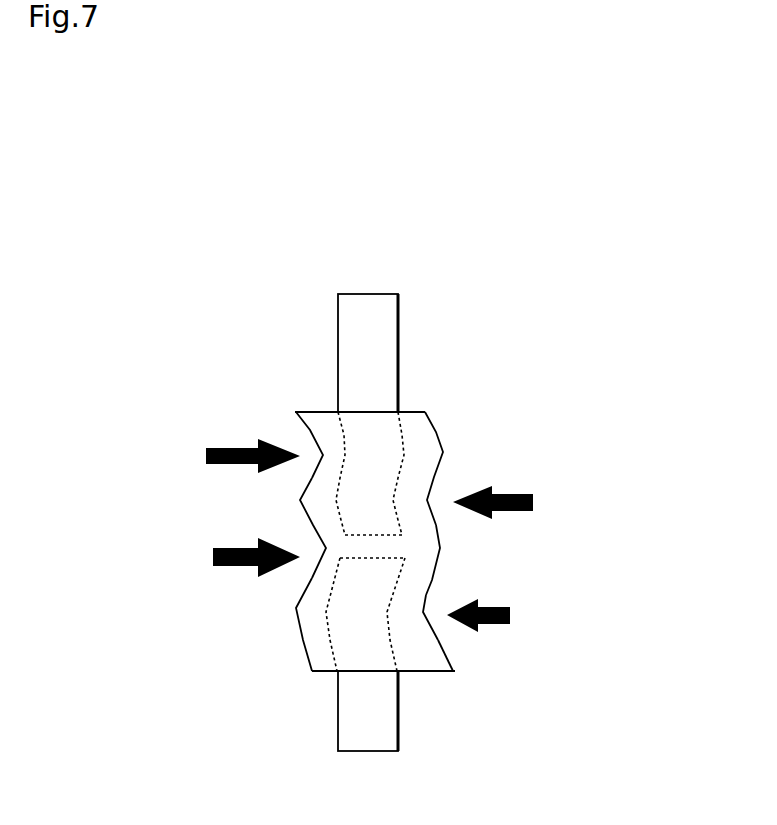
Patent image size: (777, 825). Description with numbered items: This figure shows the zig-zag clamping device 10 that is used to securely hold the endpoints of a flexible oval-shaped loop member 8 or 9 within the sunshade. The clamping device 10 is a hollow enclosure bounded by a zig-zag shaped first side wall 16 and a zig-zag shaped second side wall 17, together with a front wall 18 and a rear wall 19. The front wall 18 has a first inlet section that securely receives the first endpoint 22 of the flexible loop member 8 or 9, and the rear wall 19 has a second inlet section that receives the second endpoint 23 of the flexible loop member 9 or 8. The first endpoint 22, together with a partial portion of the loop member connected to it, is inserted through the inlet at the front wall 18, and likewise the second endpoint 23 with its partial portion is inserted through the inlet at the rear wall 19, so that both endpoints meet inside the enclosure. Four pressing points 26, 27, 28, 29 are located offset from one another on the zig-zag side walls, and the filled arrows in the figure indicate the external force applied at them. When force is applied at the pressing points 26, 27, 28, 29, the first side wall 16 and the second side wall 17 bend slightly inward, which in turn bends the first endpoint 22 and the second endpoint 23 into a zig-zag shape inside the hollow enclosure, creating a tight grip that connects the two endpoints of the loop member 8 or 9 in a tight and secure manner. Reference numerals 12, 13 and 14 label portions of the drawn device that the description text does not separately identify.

The flexible loop member 8 is at (378, 292).
The flexible loop member 9 is at (378, 292).
The clamping device 10 is at (511, 275).
The upper tube end 12 is at (337, 350).
The lower tube end 13 is at (337, 718).
The tube wall 14 is at (420, 457).
The zig-zag shaped first side wall 16 is at (446, 570).
The zig-zag shaped second side wall 17 is at (305, 648).
The front wall 18 is at (410, 407).
The rear wall 19 is at (430, 675).
The first endpoint 22 is at (333, 503).
The second endpoint 23 is at (325, 633).
The pressing point 26 is at (320, 457).
The pressing point 27 is at (320, 553).
The pressing point 28 is at (432, 497).
The pressing point 29 is at (428, 615).